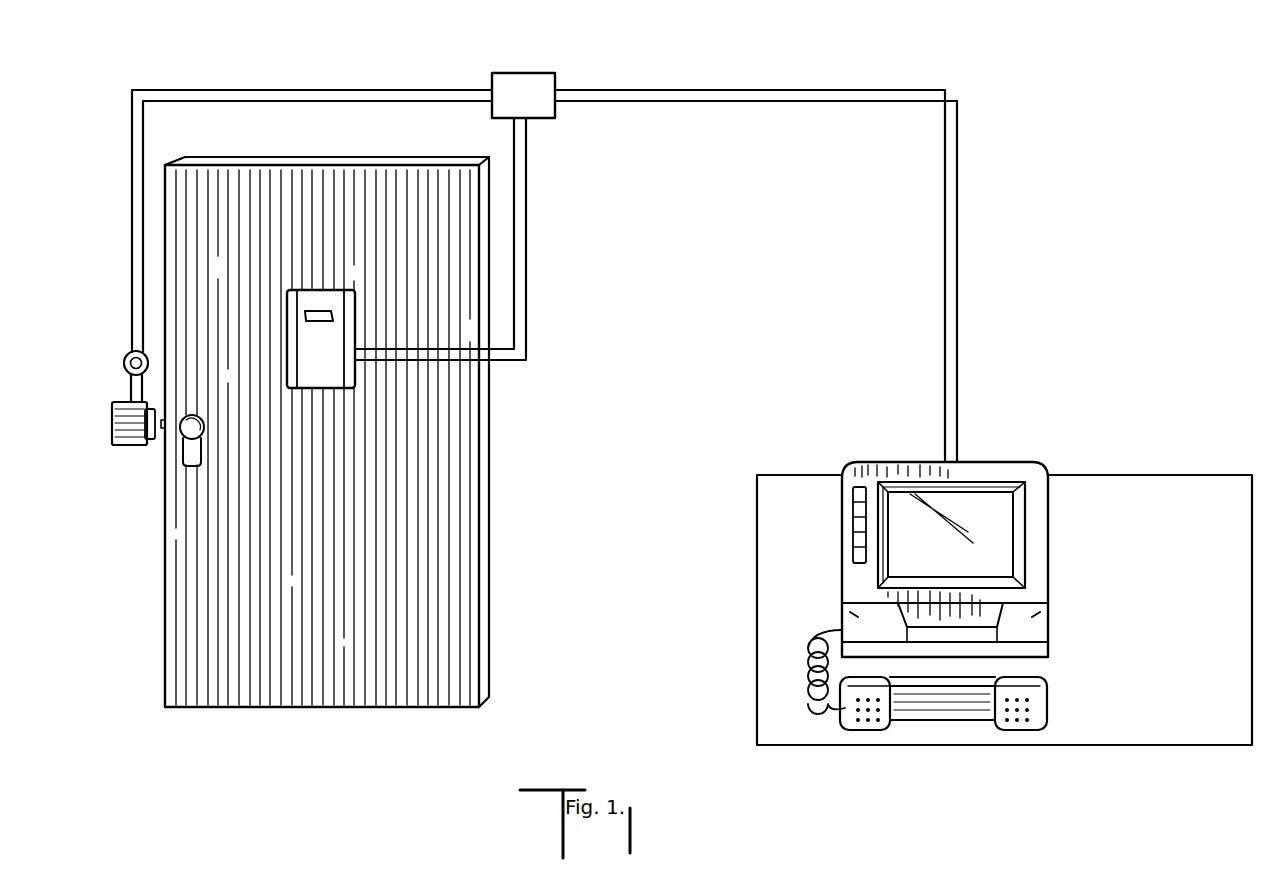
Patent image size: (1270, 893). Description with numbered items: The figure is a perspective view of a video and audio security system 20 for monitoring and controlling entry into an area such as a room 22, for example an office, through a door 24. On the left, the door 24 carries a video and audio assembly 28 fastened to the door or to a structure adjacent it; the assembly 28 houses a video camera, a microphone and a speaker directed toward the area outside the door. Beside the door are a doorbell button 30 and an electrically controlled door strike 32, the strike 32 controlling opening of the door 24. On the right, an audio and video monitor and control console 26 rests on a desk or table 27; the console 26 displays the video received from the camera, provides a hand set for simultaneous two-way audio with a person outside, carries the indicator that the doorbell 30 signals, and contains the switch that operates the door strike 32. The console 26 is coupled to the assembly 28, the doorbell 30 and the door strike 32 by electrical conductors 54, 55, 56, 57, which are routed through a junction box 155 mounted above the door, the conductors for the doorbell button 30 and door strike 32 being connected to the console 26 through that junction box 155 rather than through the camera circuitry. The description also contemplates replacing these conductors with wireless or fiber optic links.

The video and audio security system 20 is at (1040, 266).
The room 22 is at (617, 652).
The door 24 is at (463, 473).
The audio and video monitor and control console 26 is at (1030, 448).
The desk or table 27 is at (1174, 492).
The video and audio assembly 28 is at (337, 329).
The doorbell button 30 is at (123, 361).
The electrically controlled door strike 32 is at (112, 434).
The electrical conductor 54 is at (953, 326).
The electrical conductor 55 is at (528, 177).
The electrical conductor 56 is at (315, 86).
The electrical conductor 57 is at (130, 387).
The junction box 155 is at (550, 80).